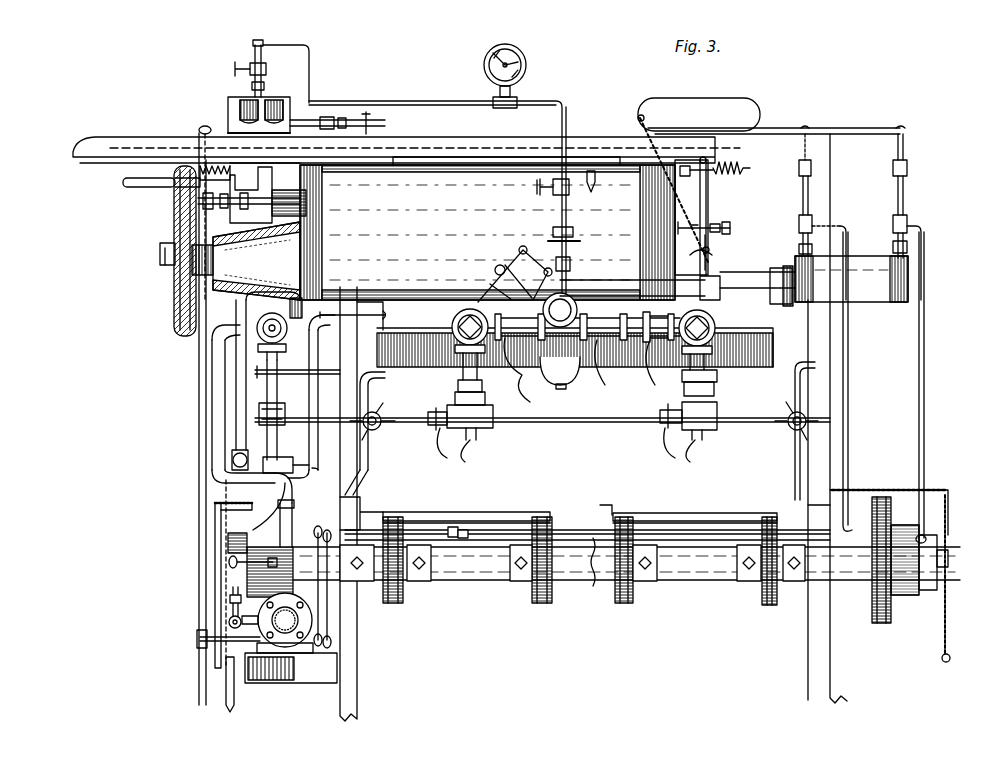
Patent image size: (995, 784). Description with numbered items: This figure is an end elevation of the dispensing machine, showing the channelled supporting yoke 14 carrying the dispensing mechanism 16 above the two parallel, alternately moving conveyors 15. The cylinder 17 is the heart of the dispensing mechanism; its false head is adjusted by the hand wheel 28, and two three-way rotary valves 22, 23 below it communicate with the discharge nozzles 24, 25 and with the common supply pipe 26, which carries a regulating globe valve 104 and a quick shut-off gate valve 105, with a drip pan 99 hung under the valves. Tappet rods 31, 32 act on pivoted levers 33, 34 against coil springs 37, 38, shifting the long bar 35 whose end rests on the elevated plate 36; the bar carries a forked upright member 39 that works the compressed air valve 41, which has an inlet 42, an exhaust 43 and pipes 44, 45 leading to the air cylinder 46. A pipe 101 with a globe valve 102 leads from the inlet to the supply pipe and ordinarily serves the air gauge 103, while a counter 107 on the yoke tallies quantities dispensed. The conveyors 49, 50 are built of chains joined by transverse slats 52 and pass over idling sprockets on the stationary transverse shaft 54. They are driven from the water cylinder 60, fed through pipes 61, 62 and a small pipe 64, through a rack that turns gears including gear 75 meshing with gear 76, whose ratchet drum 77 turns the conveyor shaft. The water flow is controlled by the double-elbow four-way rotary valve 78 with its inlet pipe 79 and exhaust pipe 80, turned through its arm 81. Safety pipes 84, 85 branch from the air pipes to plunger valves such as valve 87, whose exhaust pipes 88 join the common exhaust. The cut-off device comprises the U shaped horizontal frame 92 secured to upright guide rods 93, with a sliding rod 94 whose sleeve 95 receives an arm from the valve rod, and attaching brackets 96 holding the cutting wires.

The channelled supporting yoke 14 is at (462, 147).
The conveyors 15 is at (497, 512).
The dispensing mechanism 16 is at (176, 298).
The cylinder 17 is at (504, 228).
The three-way rotary valve 22 is at (717, 320).
The three-way rotary valve 23 is at (440, 338).
The discharge nozzle 24 is at (717, 413).
The discharge nozzle 25 is at (485, 413).
The common supply pipe 26 is at (522, 380).
The hand wheel 28 is at (175, 285).
The tappet rod 31 is at (712, 238).
The tappet rod 32 is at (200, 203).
The pivoted lever 33 is at (708, 210).
The pivoted lever 34 is at (267, 193).
The long bar 35 is at (598, 147).
The elevated plate 36 is at (188, 150).
The coil spring 37 is at (726, 180).
The coil spring 38 is at (215, 180).
The forked upright member 39 is at (366, 112).
The compressed air valve 41 is at (232, 98).
The compressed air inlet 42 is at (262, 68).
The exhaust 43 is at (209, 125).
The pipe 44 is at (906, 196).
The pipe 45 is at (806, 200).
The air cylinder 46 is at (860, 262).
The conveyor 49 is at (608, 508).
The conveyor 50 is at (553, 515).
The transverse slats 52 is at (455, 512).
The stationary transverse shaft 54 is at (460, 568).
The water cylinder 60 is at (305, 640).
The pipe 61 is at (340, 397).
The pipe 62 is at (212, 402).
The short pipe 64 is at (230, 589).
The gear 75 is at (880, 625).
The gear 76 is at (898, 598).
The ratchet carrying drum 77 is at (920, 595).
The double-elbow four-way rotary valve 78 is at (260, 348).
The water inlet pipe 79 is at (237, 372).
The exhaust pipe 80 is at (226, 692).
The arm 81 is at (256, 305).
The pipe 84 is at (926, 340).
The pipe 85 is at (848, 340).
The plunger valve 87 is at (440, 290).
The exhaust pipes 88 is at (222, 632).
The U shaped horizontal frame 92 is at (590, 425).
The upright guide rods 93 is at (370, 458).
The rod 94 is at (295, 505).
The sleeve 95 is at (260, 437).
The attaching brackets 96 is at (455, 452).
The drip pan 99 is at (600, 365).
The pipe 101 is at (425, 103).
The globe valve 102 is at (553, 190).
The air gauge 103 is at (527, 66).
The globe valve 104 is at (590, 298).
The quick shut-off gate valve 105 is at (528, 298).
The counter 107 is at (722, 112).